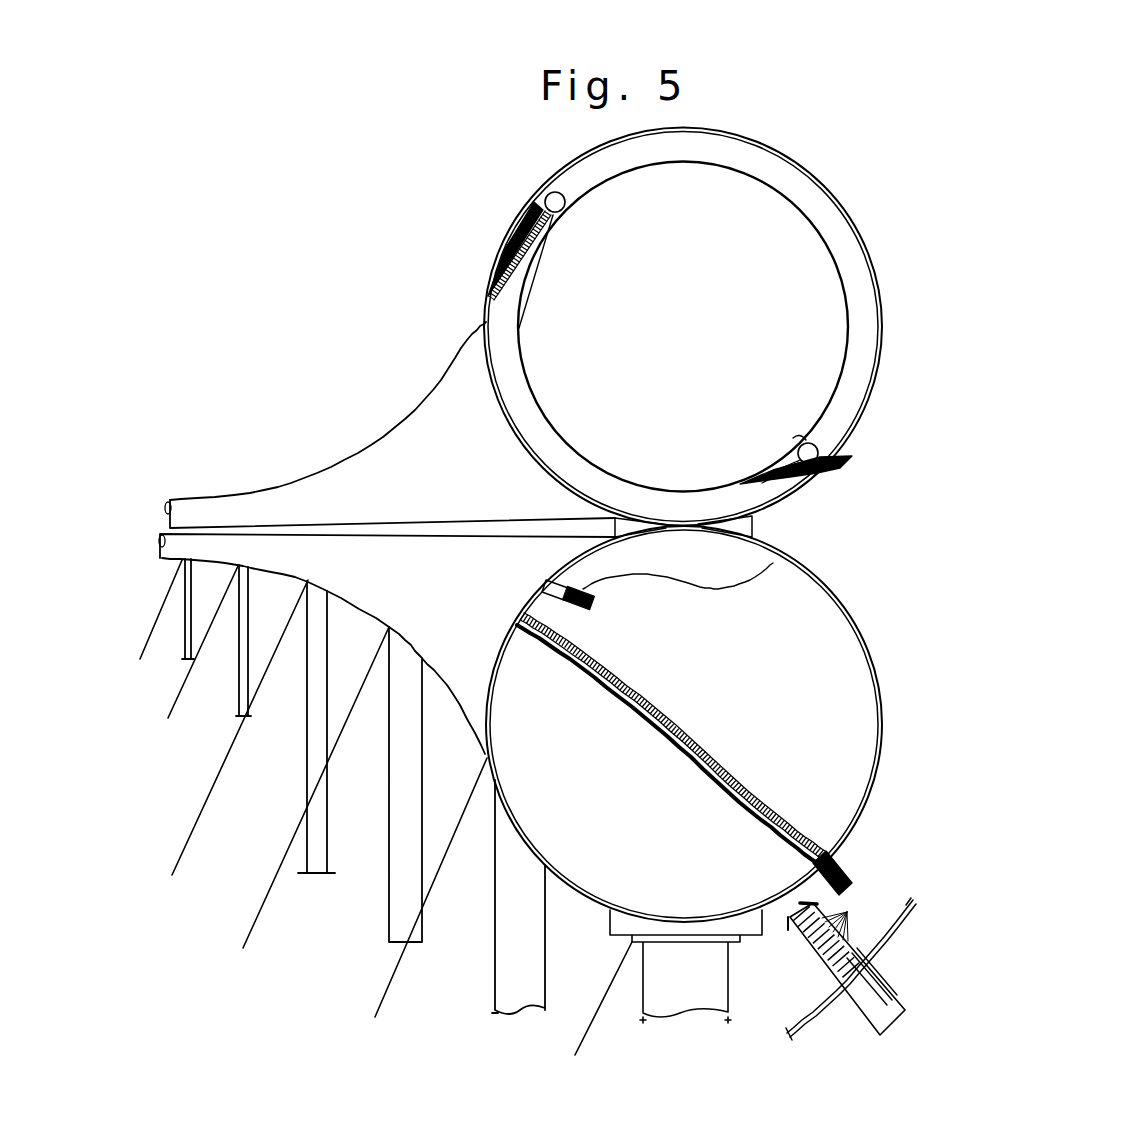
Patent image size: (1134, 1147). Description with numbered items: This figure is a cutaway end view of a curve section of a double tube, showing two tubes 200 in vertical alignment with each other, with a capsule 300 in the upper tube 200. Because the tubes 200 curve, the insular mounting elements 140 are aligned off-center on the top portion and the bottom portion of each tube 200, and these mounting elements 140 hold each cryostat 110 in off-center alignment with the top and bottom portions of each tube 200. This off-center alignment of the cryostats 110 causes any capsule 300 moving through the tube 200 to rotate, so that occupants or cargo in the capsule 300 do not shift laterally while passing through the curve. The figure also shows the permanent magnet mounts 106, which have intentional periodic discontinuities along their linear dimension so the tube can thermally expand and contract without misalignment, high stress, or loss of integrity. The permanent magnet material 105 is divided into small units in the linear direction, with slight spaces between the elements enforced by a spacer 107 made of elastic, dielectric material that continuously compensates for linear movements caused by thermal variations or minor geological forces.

The permanent magnet material 105 is at (623, 672).
The permanent magnet mount 106 is at (848, 868).
The spacer 107 is at (837, 910).
The cryostat 110 is at (551, 190).
The insular mounting element 140 is at (517, 220).
The tube 200 is at (388, 460).
The capsule 300 is at (505, 378).